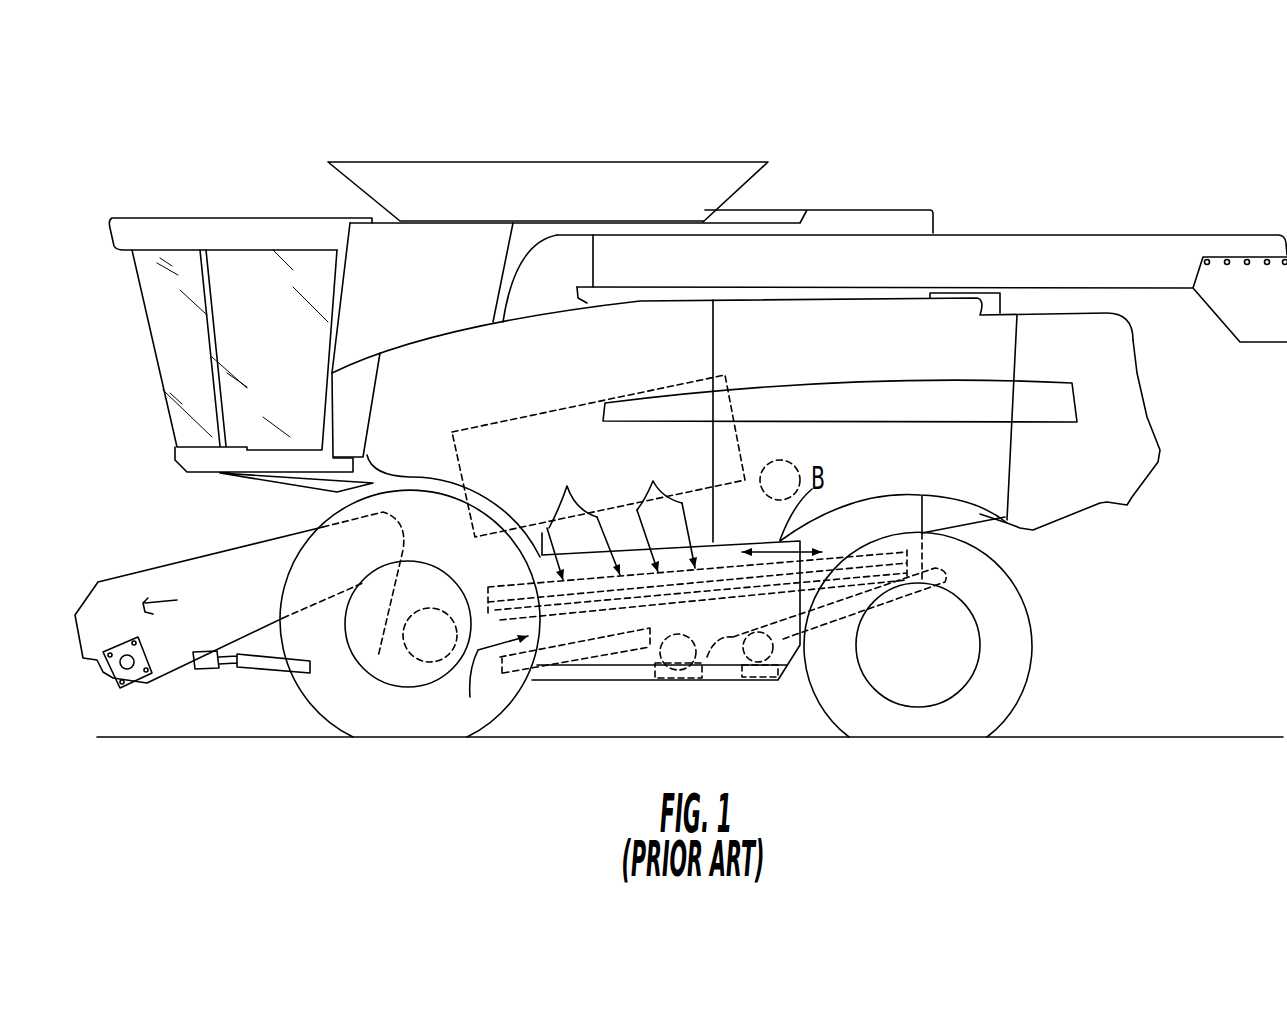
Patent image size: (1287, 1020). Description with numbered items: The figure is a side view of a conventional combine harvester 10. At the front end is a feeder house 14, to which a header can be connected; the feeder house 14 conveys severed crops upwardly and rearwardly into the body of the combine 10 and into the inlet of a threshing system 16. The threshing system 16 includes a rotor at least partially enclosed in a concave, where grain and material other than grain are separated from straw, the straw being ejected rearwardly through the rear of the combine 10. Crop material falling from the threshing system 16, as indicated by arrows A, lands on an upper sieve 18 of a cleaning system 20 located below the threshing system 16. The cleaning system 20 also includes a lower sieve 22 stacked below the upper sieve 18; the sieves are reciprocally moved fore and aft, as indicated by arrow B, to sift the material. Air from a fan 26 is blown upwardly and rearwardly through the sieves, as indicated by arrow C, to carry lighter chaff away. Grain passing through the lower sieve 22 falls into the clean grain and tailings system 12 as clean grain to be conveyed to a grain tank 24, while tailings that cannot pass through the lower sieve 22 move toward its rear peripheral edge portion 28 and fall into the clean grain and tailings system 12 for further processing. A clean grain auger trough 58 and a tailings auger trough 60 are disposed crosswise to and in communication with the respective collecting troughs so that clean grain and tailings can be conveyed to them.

The combine harvester 10 is at (1117, 150).
The clean grain and tailings system 12 is at (872, 617).
The feeder house 14 is at (135, 572).
The threshing system 16 is at (684, 378).
The upper sieve 18 is at (720, 567).
The cleaning system 20 is at (835, 553).
The lower sieve 22 is at (475, 612).
The grain tank 24 is at (708, 160).
The fan 26 is at (413, 657).
The rear peripheral edge portion 28 is at (890, 577).
The clean grain auger trough 58 is at (650, 652).
The tailings auger trough 60 is at (742, 652).